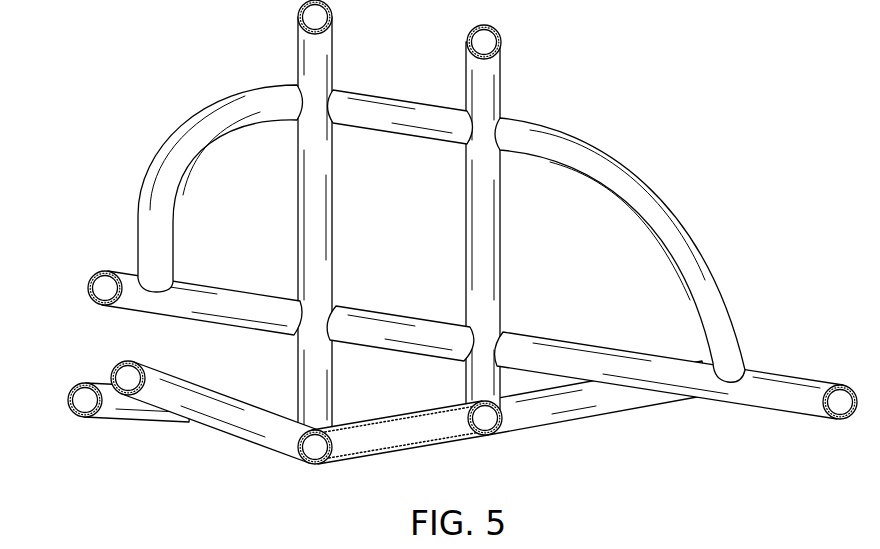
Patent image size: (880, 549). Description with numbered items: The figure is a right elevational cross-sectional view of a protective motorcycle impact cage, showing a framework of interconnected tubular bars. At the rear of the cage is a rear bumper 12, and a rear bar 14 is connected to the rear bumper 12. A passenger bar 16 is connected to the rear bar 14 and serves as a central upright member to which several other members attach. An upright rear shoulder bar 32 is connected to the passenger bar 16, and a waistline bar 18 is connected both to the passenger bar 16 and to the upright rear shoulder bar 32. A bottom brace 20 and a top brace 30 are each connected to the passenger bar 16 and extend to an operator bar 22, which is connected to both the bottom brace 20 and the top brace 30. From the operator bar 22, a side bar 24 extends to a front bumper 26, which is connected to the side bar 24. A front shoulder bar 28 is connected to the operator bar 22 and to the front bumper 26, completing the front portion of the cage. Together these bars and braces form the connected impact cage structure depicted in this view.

The rear bumper 12 is at (139, 406).
The rear bar 14 is at (260, 427).
The passenger bar 16 is at (303, 57).
The waistline bar 18 is at (134, 286).
The bottom brace 20 is at (393, 433).
The operator bar 22 is at (488, 100).
The side bar 24 is at (553, 408).
The front bumper 26 is at (757, 391).
The front shoulder bar 28 is at (590, 150).
The top brace 30 is at (440, 123).
The upright rear shoulder bar 32 is at (193, 128).